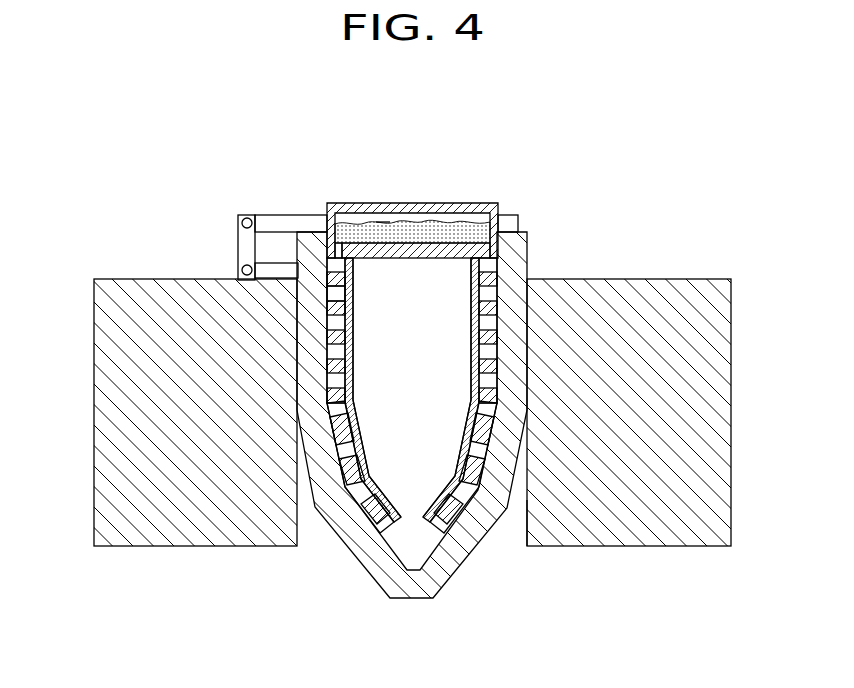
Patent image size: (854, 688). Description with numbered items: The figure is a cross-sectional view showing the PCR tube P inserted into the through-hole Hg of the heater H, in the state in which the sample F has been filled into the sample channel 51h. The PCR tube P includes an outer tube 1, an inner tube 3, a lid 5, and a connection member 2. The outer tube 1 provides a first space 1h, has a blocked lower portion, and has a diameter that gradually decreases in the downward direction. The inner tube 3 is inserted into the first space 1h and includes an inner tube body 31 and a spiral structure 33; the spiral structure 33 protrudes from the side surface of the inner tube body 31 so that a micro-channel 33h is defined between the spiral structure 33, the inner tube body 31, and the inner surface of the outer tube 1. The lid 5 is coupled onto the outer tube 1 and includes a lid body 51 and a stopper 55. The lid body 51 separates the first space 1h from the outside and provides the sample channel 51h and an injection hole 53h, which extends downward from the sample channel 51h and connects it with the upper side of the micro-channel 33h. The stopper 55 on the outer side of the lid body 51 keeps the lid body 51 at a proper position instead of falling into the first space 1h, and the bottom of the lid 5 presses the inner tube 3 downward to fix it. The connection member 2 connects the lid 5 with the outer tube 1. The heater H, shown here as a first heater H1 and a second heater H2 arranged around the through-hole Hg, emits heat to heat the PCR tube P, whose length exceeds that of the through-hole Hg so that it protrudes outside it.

The outer tube 1 is at (345, 531).
The first space 1h is at (403, 448).
The connection member 2 is at (243, 248).
The inner tube 3 is at (796, 292).
The inner tube body 31 is at (482, 293).
The spiral structure 33 is at (488, 352).
The micro-channel 33h is at (335, 285).
The lid 5 is at (297, 148).
The lid body 51 is at (437, 205).
The sample channel 51h is at (381, 216).
The injection hole 53h is at (332, 253).
The stopper 55 is at (506, 217).
The sample F is at (487, 238).
The heater H is at (719, 245).
The first heater H1 is at (112, 410).
The second heater H2 is at (713, 417).
The through-hole Hg is at (516, 533).
The PCR tube P is at (596, 136).